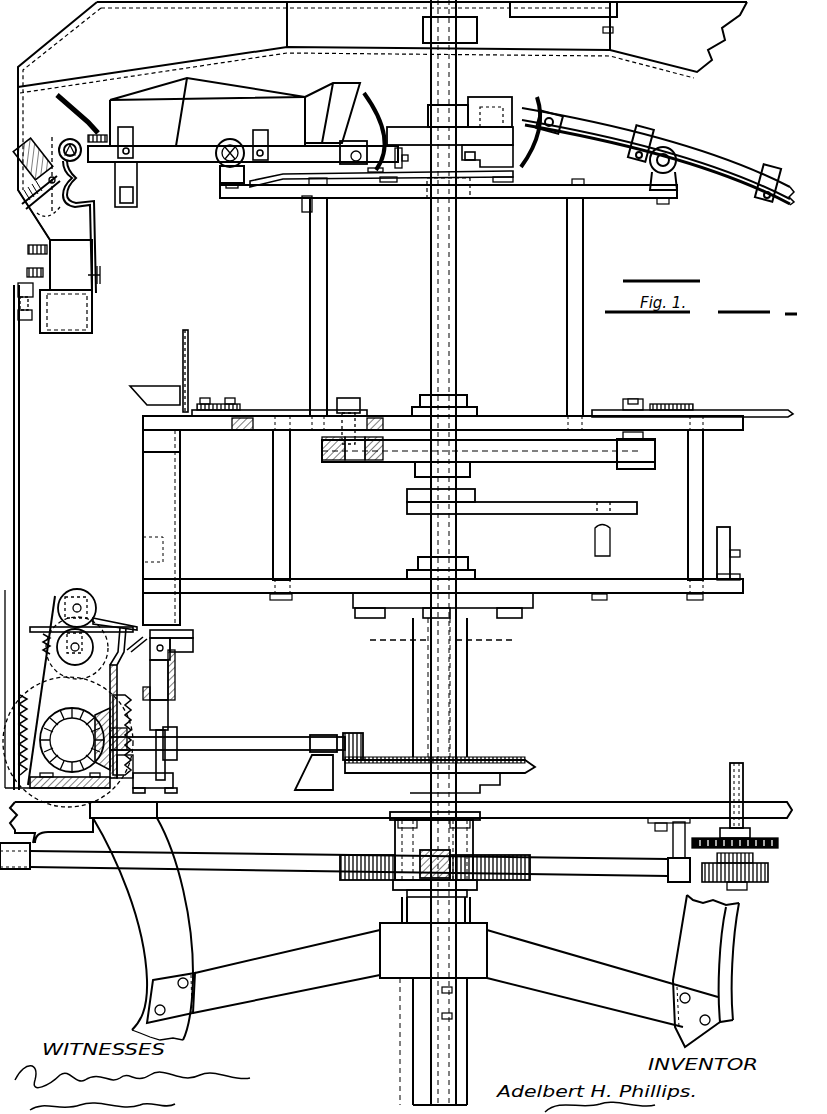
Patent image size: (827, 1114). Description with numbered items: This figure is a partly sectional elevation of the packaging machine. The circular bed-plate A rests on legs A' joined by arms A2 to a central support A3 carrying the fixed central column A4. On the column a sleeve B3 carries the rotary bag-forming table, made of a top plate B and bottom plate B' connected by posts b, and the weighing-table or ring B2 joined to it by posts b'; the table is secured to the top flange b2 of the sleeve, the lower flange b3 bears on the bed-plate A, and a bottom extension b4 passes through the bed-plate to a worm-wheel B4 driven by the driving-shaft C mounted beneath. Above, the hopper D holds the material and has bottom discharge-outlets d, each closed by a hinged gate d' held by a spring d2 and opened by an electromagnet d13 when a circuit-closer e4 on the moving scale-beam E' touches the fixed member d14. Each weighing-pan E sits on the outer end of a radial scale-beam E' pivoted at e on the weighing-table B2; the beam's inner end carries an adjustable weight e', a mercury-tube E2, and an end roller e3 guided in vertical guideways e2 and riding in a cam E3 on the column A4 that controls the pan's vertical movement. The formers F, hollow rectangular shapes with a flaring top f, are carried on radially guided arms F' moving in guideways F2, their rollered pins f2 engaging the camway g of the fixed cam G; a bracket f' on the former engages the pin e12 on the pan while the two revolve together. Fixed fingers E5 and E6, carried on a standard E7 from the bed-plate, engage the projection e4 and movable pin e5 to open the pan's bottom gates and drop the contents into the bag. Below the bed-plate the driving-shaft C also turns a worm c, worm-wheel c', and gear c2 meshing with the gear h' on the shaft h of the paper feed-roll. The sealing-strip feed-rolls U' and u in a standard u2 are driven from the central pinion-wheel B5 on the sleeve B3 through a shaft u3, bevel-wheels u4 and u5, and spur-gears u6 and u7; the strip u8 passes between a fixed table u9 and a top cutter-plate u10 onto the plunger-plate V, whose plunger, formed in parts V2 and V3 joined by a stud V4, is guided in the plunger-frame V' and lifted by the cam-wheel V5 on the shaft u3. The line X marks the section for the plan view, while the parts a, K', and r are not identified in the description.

The hopper D is at (382, 121).
The fixed central column A4 is at (456, 321).
The fixed member in the circuit d14 is at (100, 128).
The electromagnet d13 is at (46, 128).
The bottom discharge-outlet d is at (144, 168).
The hinged gate d' is at (53, 185).
The spring d2 is at (50, 215).
The circuit-closer / fixed projection e4 is at (88, 142).
The movable pin e5 is at (27, 270).
The weighing-pan E is at (68, 247).
The pin e12 is at (100, 275).
The standard E7 is at (19, 455).
The fixed finger E5 is at (30, 297).
The fixed finger E6 is at (25, 320).
The scale-beam E' is at (243, 165).
The pivot e is at (222, 163).
The mercury-tube E2 is at (205, 122).
The adjustable weight e' is at (567, 150).
The vertical guideways e2 is at (380, 125).
The plate a is at (302, 210).
The cam E3 is at (468, 105).
The end roller e3 is at (462, 155).
The worm c is at (653, 482).
The weighing-table B2 is at (620, 198).
The posts b' is at (458, 307).
The top plate B is at (443, 442).
The former-arm F' is at (492, 394).
The guideways F2 is at (228, 404).
The bracket f' is at (196, 371).
The flaring top f is at (155, 383).
The rollered pin f2 is at (360, 401).
The former F is at (161, 527).
The posts b is at (496, 515).
The bottom plate B' is at (443, 605).
The top flange b2 is at (522, 604).
The fixed cam G is at (530, 462).
The camway g is at (330, 460).
The bracket K' is at (585, 534).
The sleeve B3 is at (467, 703).
The section line X is at (434, 642).
The central pinion-wheel B5 is at (535, 765).
The lower flange b3 is at (500, 785).
The shaft u3 is at (220, 737).
The bed-plate A is at (396, 822).
The shaft h is at (746, 795).
The gear h' is at (749, 827).
The gear c2 is at (746, 841).
The worm-wheel c' is at (746, 876).
The driving-shaft C is at (220, 853).
The worm-wheel B4 is at (470, 852).
The bottom extension b4 is at (467, 897).
The central support A3 is at (487, 932).
The arms A2 is at (585, 992).
The legs A' is at (414, 924).
The feed-roll U' is at (77, 594).
The feed-roll u is at (77, 648).
The standard u2 is at (48, 688).
The bevel-wheel u5 is at (60, 706).
The bevel-wheel u4 is at (100, 708).
The spur-gear u7 is at (36, 690).
The spur-gear u6 is at (36, 640).
The sealing-strip paper u8 is at (42, 627).
The top cutter-plate u10 is at (125, 622).
The fixed table u9 is at (134, 648).
The bracket r is at (196, 625).
The plunger part V2 is at (193, 645).
The screw-threaded connecting-stud V4 is at (170, 655).
The plunger-frame V' is at (171, 675).
The plunger part V3 is at (168, 697).
The plunger-plate V is at (152, 728).
The cam-wheel V5 is at (166, 765).